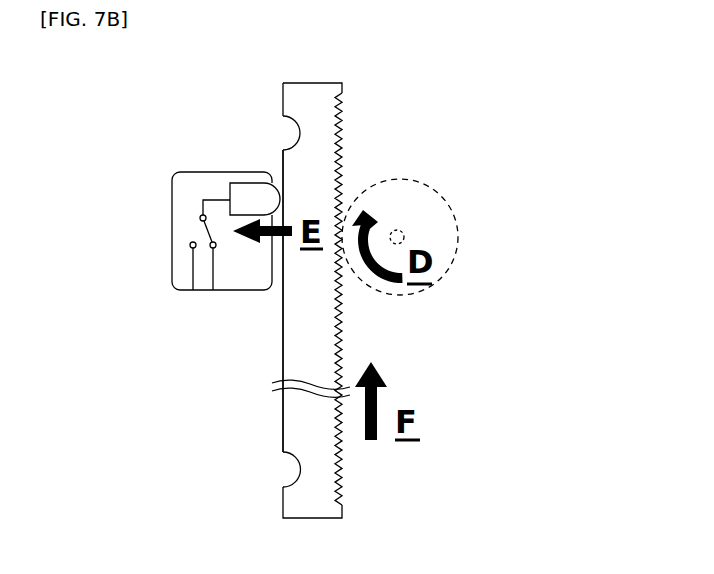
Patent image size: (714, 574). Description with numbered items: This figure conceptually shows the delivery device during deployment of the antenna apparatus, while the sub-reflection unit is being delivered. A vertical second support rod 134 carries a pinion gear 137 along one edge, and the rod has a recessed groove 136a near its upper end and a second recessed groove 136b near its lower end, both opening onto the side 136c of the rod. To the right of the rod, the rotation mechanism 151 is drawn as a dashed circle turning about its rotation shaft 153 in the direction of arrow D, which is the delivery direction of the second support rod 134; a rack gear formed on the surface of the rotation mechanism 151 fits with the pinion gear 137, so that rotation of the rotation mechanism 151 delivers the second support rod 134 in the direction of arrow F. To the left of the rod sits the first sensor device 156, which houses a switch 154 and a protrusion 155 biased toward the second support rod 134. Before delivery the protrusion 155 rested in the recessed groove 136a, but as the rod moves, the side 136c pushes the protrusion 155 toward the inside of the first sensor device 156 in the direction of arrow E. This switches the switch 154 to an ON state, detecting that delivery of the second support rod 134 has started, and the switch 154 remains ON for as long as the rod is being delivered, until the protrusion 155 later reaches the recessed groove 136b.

The second support rod 134 is at (323, 335).
The pinion gear 137 is at (347, 308).
The recessed groove 136a is at (298, 133).
The recessed groove 136b is at (298, 469).
The side 136c is at (283, 339).
The rotation mechanism 151 is at (402, 202).
The rotation shaft 153 is at (404, 237).
The switch 154 is at (200, 228).
The protrusion 155 is at (260, 183).
The first sensor device 156 is at (194, 172).